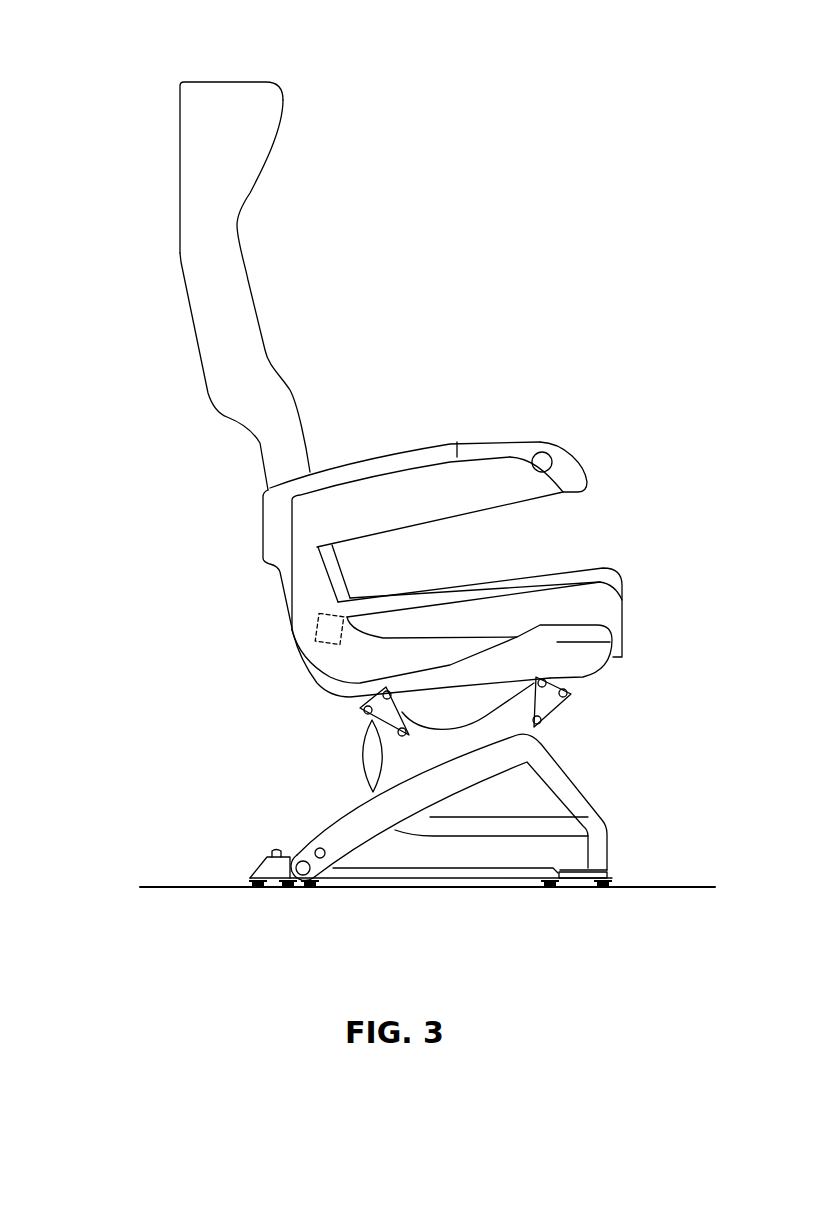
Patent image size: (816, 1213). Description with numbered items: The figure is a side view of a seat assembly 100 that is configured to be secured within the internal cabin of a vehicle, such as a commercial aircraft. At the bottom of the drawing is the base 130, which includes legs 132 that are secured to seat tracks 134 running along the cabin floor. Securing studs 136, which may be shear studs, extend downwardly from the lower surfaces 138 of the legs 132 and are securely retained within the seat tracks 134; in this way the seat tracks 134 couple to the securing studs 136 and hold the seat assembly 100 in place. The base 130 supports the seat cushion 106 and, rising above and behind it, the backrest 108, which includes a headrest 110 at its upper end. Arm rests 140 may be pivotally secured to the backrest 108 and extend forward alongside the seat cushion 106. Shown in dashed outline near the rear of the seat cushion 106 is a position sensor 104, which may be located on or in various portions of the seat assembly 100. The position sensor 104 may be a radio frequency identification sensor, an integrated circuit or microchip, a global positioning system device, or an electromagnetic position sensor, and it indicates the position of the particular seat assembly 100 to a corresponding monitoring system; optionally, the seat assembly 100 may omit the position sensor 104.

The seat assembly 100 is at (158, 78).
The position sensor 104 is at (313, 637).
The seat cushion 106 is at (553, 568).
The backrest 108 is at (178, 220).
The headrest 110 is at (253, 193).
The base 130 is at (358, 802).
The legs 132 is at (252, 868).
The seat tracks 134 is at (333, 890).
The securing studs 136 is at (258, 888).
The lower surfaces 138 is at (272, 850).
The arm rests 140 is at (492, 438).